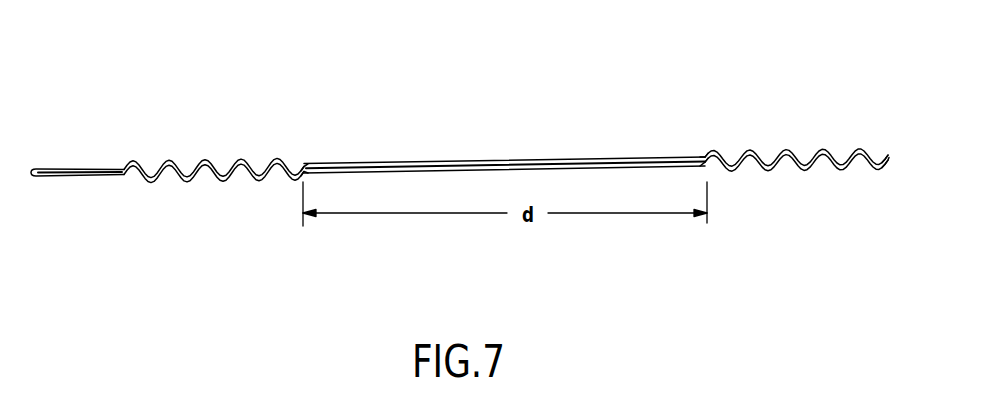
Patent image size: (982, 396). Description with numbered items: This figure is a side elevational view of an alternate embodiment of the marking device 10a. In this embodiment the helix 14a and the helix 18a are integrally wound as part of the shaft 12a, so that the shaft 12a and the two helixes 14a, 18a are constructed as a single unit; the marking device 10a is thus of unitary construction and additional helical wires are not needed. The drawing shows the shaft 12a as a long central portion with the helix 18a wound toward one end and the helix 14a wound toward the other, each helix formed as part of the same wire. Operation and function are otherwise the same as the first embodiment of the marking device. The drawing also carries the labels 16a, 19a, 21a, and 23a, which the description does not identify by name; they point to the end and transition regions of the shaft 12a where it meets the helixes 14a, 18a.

The marking device 10a is at (253, 233).
The shaft 12a is at (424, 161).
The helix 14a is at (825, 150).
The distal tip end 16a is at (891, 156).
The helix 18a is at (146, 181).
The proximal transition of straight section 19a is at (294, 160).
The proximal end portion 21a is at (120, 160).
The distal transition of straight section 23a is at (707, 152).